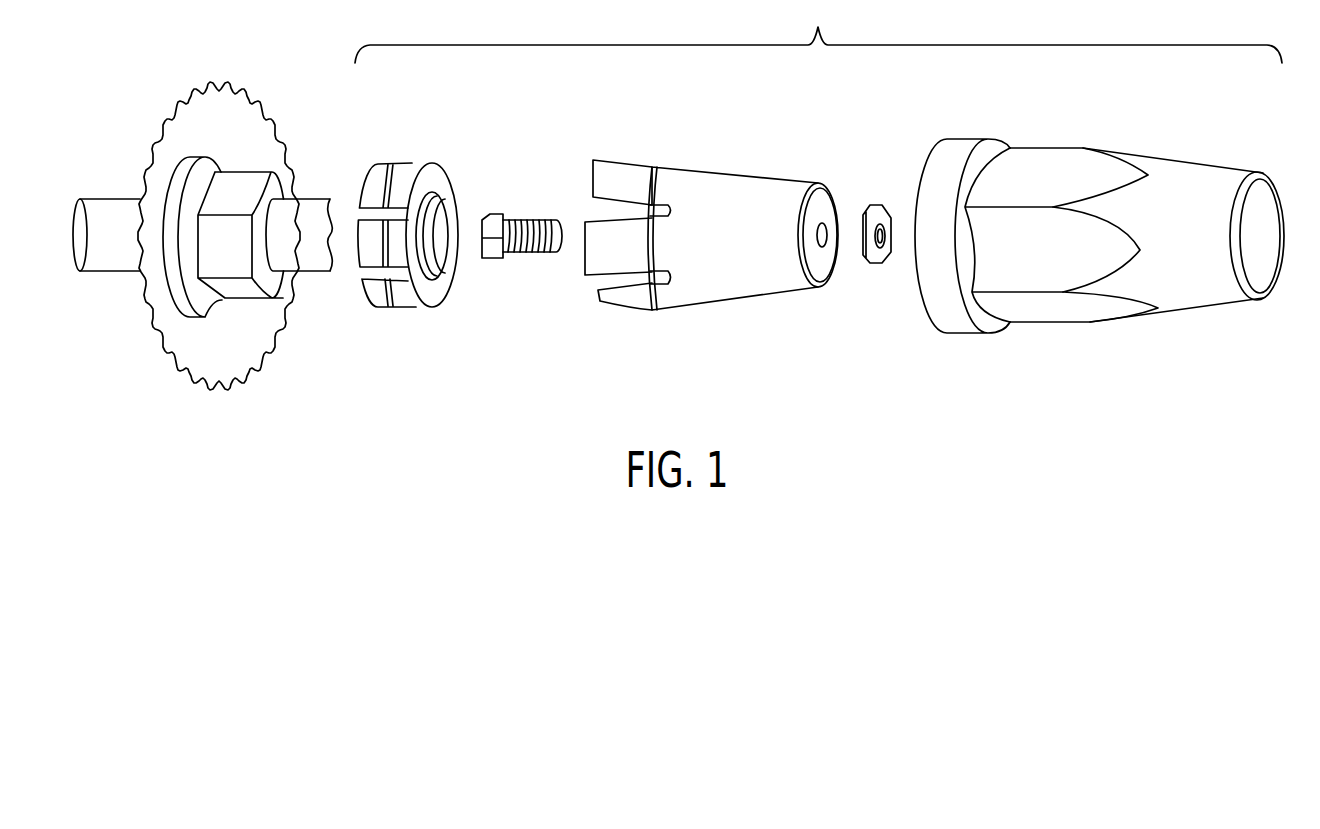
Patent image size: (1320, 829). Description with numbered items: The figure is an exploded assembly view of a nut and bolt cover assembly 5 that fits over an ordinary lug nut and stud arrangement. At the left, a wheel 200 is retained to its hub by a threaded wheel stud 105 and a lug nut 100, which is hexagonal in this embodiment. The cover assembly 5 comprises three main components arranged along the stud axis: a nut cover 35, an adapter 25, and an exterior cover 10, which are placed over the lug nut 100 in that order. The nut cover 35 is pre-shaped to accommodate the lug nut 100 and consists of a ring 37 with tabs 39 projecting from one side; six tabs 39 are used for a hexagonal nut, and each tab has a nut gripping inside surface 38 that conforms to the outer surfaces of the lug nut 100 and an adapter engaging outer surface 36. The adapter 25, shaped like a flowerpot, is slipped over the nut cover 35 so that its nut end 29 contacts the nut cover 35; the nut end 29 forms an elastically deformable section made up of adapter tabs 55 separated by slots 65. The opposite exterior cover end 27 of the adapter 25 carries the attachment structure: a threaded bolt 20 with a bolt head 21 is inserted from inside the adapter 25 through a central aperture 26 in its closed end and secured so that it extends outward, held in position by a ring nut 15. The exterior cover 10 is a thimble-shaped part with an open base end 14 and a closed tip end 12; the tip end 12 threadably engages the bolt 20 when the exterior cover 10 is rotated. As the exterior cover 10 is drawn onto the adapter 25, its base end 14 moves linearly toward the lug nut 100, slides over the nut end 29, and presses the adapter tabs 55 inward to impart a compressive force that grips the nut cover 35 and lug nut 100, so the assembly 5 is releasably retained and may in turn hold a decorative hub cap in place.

The nut and bolt cover assembly 5 is at (818, 32).
The exterior cover 10 is at (1105, 234).
The tip end 12 is at (1263, 305).
The base end 14 is at (960, 335).
The nut 15 is at (878, 207).
The threaded bolt 20 is at (515, 206).
The bolt head 21 is at (493, 217).
The adapter 25 is at (693, 251).
The aperture 26 is at (815, 242).
The exterior cover end 27 is at (827, 288).
The nut end 29 is at (632, 317).
The nut cover 35 is at (408, 225).
The adapter engaging outer surface 36 is at (375, 268).
The ring 37 is at (437, 182).
The nut gripping inside surface 38 is at (438, 243).
The tabs 39 is at (368, 303).
The adapter tabs 55 is at (632, 170).
The slots 65 is at (593, 282).
The lug nut 100 is at (245, 178).
The wheel stud 105 is at (120, 200).
The wheel 200 is at (198, 108).